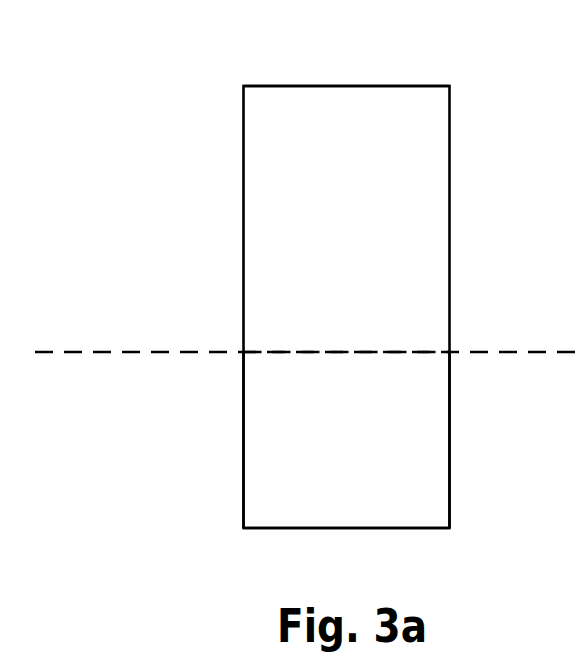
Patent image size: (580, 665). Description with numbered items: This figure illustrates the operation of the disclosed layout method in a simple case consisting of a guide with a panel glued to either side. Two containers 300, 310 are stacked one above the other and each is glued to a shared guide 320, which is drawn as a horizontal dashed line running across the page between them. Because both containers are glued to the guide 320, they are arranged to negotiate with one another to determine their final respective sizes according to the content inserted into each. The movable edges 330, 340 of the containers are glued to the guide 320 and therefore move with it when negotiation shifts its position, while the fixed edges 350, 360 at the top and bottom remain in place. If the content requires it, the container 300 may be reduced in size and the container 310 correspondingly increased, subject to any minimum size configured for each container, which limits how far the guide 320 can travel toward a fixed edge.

The container 300 is at (390, 235).
The container 310 is at (400, 500).
The guide 320 is at (65, 352).
The movable edge 330 is at (292, 352).
The movable edge 340 is at (332, 350).
The fixed edge 350 is at (302, 85).
The fixed edge 360 is at (395, 528).